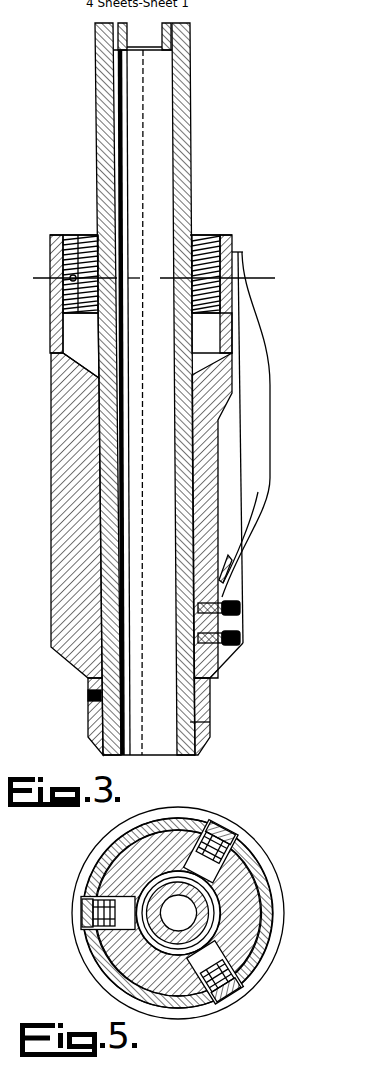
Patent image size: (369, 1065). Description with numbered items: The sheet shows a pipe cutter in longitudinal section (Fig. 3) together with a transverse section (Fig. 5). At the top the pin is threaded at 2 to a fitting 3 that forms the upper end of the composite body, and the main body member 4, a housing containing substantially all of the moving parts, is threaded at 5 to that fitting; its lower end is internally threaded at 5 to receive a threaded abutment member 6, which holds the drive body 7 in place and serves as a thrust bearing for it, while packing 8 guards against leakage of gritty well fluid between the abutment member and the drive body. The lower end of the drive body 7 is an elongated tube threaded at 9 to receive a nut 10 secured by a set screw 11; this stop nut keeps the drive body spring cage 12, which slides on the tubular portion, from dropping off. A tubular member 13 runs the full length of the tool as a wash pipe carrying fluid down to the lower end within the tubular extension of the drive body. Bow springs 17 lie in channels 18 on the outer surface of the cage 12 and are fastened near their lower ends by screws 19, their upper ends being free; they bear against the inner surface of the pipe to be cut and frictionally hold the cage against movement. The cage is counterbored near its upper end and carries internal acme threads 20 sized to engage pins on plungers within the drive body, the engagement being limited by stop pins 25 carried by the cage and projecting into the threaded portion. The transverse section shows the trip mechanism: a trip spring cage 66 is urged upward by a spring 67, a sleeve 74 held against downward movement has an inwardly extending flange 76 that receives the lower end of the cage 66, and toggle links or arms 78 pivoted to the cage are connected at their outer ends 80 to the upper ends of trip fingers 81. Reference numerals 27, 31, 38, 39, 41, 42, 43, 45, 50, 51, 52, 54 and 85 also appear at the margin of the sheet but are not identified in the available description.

In FIG. 3, the threads 2 is at (1, 560).
In FIG. 3, the fitting 3 is at (3, 654).
In FIG. 5, the main body member 4 is at (262, 848).
In FIG. 3, the threads 5 is at (0, 438).
In FIG. 3, the threaded abutment member 6 is at (0, 489).
In FIG. 3, the drive body 7 is at (192, 62).
In FIG. 3, the packing 8 is at (0, 528).
In FIG. 3, the threads 9 is at (210, 706).
In FIG. 3, the nut 10 is at (210, 722).
In FIG. 3, the set screw 11 is at (87, 693).
In FIG. 3, the drive body spring cage 12 is at (66, 545).
In FIG. 3, the tubular member 13 is at (190, 36).
In FIG. 5, the tubular member 13 is at (203, 925).
In FIG. 3, the bow springs 17 is at (257, 424).
In FIG. 3, the channels 18 is at (231, 487).
In FIG. 3, the screws 19 is at (240, 606).
In FIG. 3, the internal acme threads 20 is at (226, 238).
In FIG. 3, the stop pins 25 is at (53, 266).
In FIG. 3, the connector 27 is at (0, 373).
In FIG. 3, the collar 31 is at (13, 274).
In FIG. 3, the slot 38 is at (0, 344).
In FIG. 3, the pin 39 is at (0, 322).
In FIG. 3, the sleeve 41 is at (9, 248).
In FIG. 3, the shoulder 42 is at (22, 185).
In FIG. 3, the valve seat 43 is at (0, 148).
In FIG. 3, the valve 45 is at (10, 132).
In FIG. 3, the spring 50 is at (0, 83).
In FIG. 3, the guide 51 is at (16, 113).
In FIG. 3, the cap 52 is at (0, 33).
In FIG. 3, the stem 54 is at (0, 50).
In FIG. 3, the port 85 is at (32, 114).
In FIG. 5, the trip spring cage 66 is at (0, 963).
In FIG. 5, the spring 67 is at (150, 888).
In FIG. 5, the sleeve 74 is at (0, 935).
In FIG. 5, the inwardly extending flange 76 is at (252, 870).
In FIG. 5, the arms 78 is at (209, 851).
In FIG. 5, the outer ends 80 is at (208, 830).
In FIG. 5, the trip fingers 81 is at (222, 828).